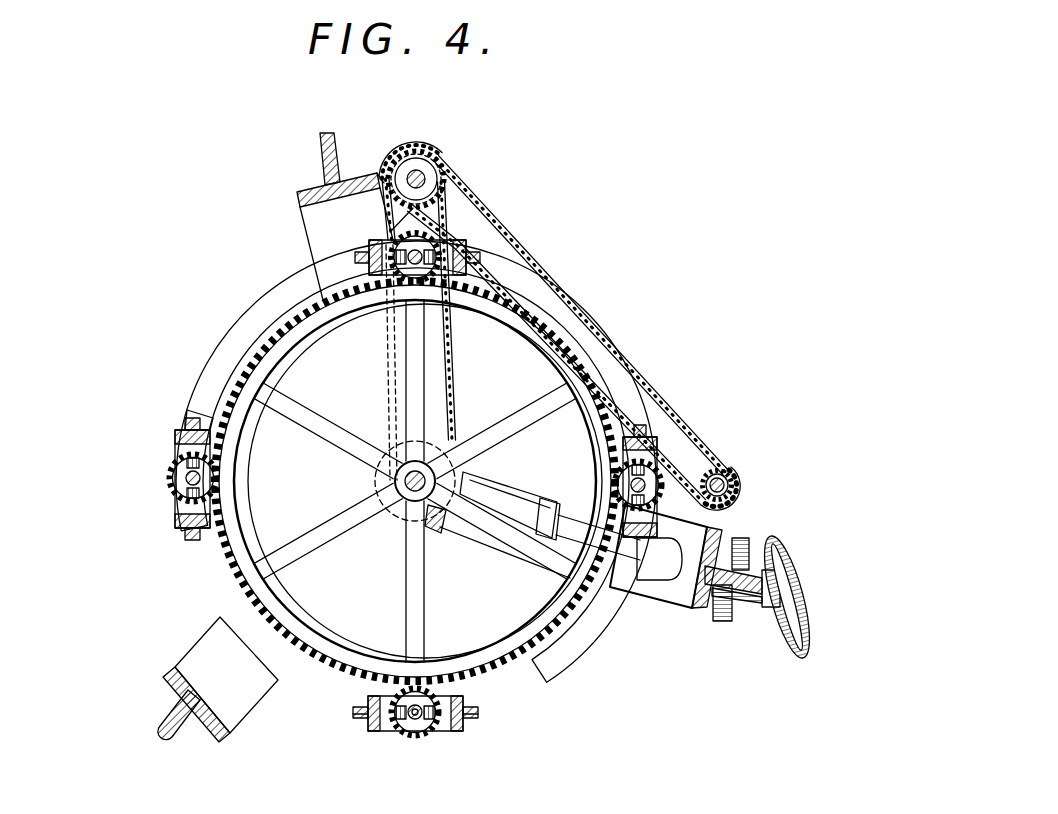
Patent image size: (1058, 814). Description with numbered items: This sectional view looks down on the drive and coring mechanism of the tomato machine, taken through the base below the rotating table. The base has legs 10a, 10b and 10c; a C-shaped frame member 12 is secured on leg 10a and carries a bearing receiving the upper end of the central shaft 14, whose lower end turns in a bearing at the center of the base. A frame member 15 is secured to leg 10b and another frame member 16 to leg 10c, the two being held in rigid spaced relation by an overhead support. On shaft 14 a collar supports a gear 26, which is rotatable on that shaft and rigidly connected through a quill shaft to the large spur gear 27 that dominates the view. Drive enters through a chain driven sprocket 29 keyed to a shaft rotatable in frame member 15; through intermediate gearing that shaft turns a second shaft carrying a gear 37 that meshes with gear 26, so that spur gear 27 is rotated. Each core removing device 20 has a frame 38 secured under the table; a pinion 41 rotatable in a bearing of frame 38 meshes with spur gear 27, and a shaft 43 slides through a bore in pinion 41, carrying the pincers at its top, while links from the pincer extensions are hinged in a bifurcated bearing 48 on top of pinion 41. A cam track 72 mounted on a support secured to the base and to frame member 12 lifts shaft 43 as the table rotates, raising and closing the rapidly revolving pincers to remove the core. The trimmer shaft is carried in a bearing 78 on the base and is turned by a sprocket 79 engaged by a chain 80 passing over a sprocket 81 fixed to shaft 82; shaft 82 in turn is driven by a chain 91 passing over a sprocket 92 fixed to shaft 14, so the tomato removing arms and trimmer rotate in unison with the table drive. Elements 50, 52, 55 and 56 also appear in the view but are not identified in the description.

The leg 10a is at (353, 585).
The leg 10b is at (487, 540).
The leg 10c is at (345, 380).
The C-shaped frame member 12 is at (167, 713).
The shaft 14 is at (396, 481).
The frame member 15 is at (620, 580).
The frame member 16 is at (320, 160).
The core removing device 20 is at (158, 450).
The gear 26 is at (397, 527).
The spur gear 27 is at (268, 310).
The chain driven sprocket 29 is at (770, 650).
The frame 38 is at (657, 520).
The pinion 41 is at (440, 735).
The shaft 43 is at (465, 729).
The bifurcated bearing 48 is at (405, 726).
The pinion 50 is at (745, 575).
The lever 52 is at (500, 505).
The screw shaft 55 is at (722, 620).
The rod 56 is at (573, 522).
The cam track 72 is at (215, 582).
The bearing 78 is at (713, 530).
The sprocket 79 is at (722, 468).
The chain 80 is at (650, 390).
The sprocket 81 is at (432, 190).
The shaft 82 is at (413, 175).
The chain 91 is at (456, 390).
The sprocket 92 is at (378, 448).
The gear 37 is at (450, 527).